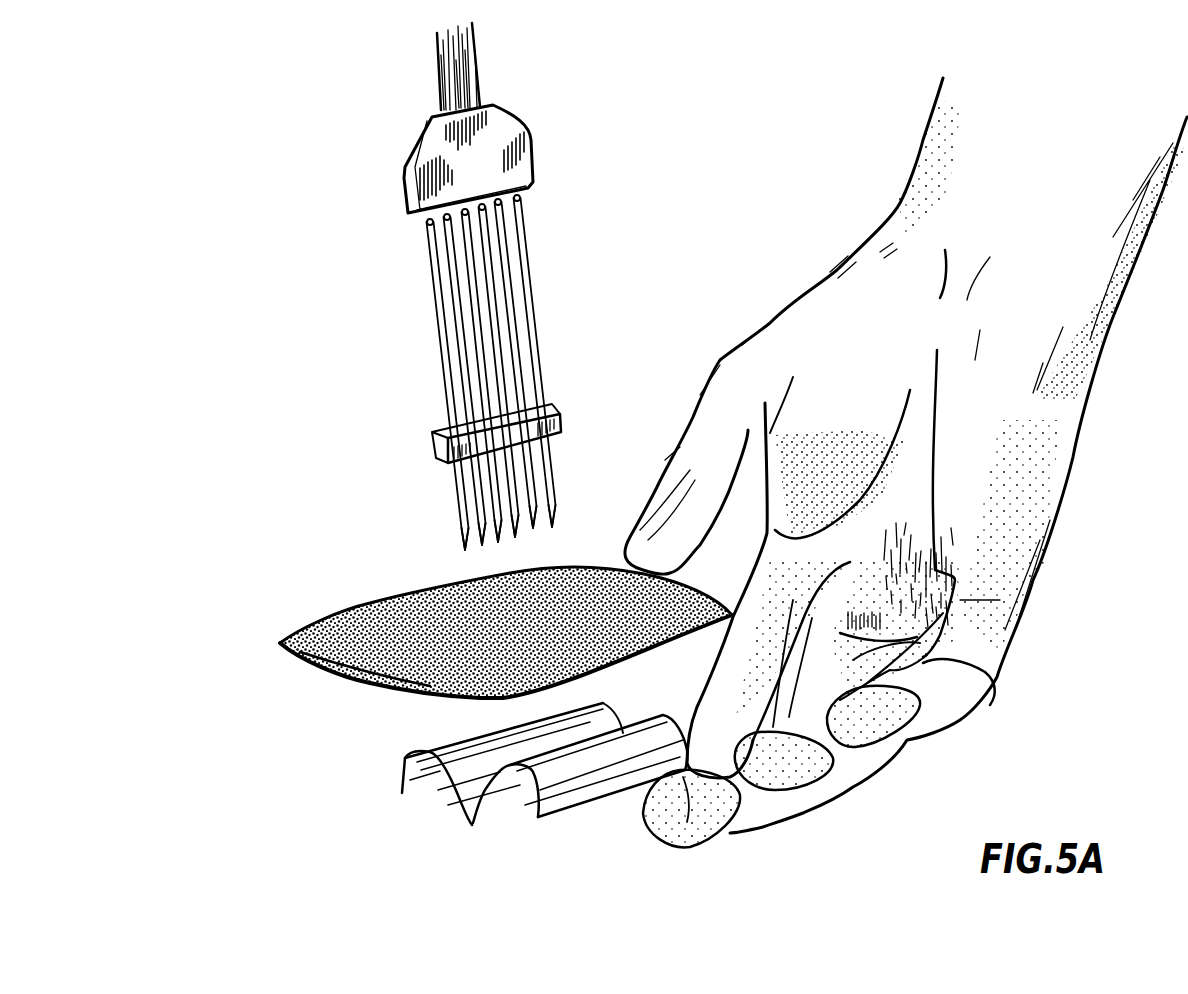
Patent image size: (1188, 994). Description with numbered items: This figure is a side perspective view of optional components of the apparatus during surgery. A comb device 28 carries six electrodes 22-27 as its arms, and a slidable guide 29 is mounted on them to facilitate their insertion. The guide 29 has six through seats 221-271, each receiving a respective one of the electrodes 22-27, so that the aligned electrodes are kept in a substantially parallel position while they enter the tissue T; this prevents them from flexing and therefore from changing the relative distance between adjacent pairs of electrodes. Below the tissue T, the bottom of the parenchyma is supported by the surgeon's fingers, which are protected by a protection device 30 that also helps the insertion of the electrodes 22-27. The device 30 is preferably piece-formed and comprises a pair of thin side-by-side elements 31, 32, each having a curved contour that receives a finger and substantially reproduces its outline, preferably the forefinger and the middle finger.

The comb device 28 is at (550, 141).
The electrodes 22-27 is at (444, 354).
The through seats 221-271 is at (537, 382).
The slidable guide 29 is at (569, 419).
The tissue T is at (292, 665).
The protection device 30 is at (501, 802).
The thin side-by-side element 31 is at (462, 737).
The thin side-by-side element 32 is at (571, 768).